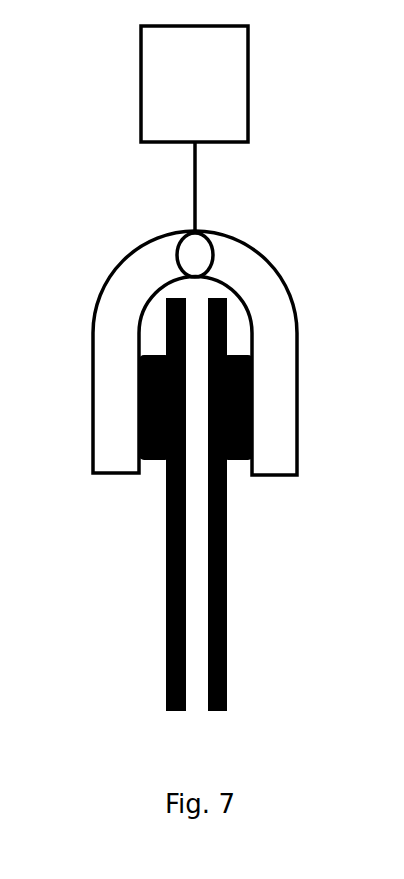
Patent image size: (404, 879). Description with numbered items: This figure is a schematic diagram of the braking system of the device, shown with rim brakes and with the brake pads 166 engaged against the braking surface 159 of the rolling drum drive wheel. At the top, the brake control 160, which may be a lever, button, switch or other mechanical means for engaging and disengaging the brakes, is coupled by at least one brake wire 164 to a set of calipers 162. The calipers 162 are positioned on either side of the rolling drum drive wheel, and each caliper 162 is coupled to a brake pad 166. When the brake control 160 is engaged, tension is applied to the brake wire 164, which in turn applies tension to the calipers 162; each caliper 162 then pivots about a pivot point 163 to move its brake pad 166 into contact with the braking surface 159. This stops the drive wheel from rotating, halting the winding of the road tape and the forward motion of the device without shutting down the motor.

The brake control 160 is at (194, 84).
The brake wire 164 is at (193, 190).
The pivot point 163 is at (213, 256).
The calipers 162 is at (93, 400).
The brake pads 166 is at (155, 462).
The braking surface 159 is at (167, 688).